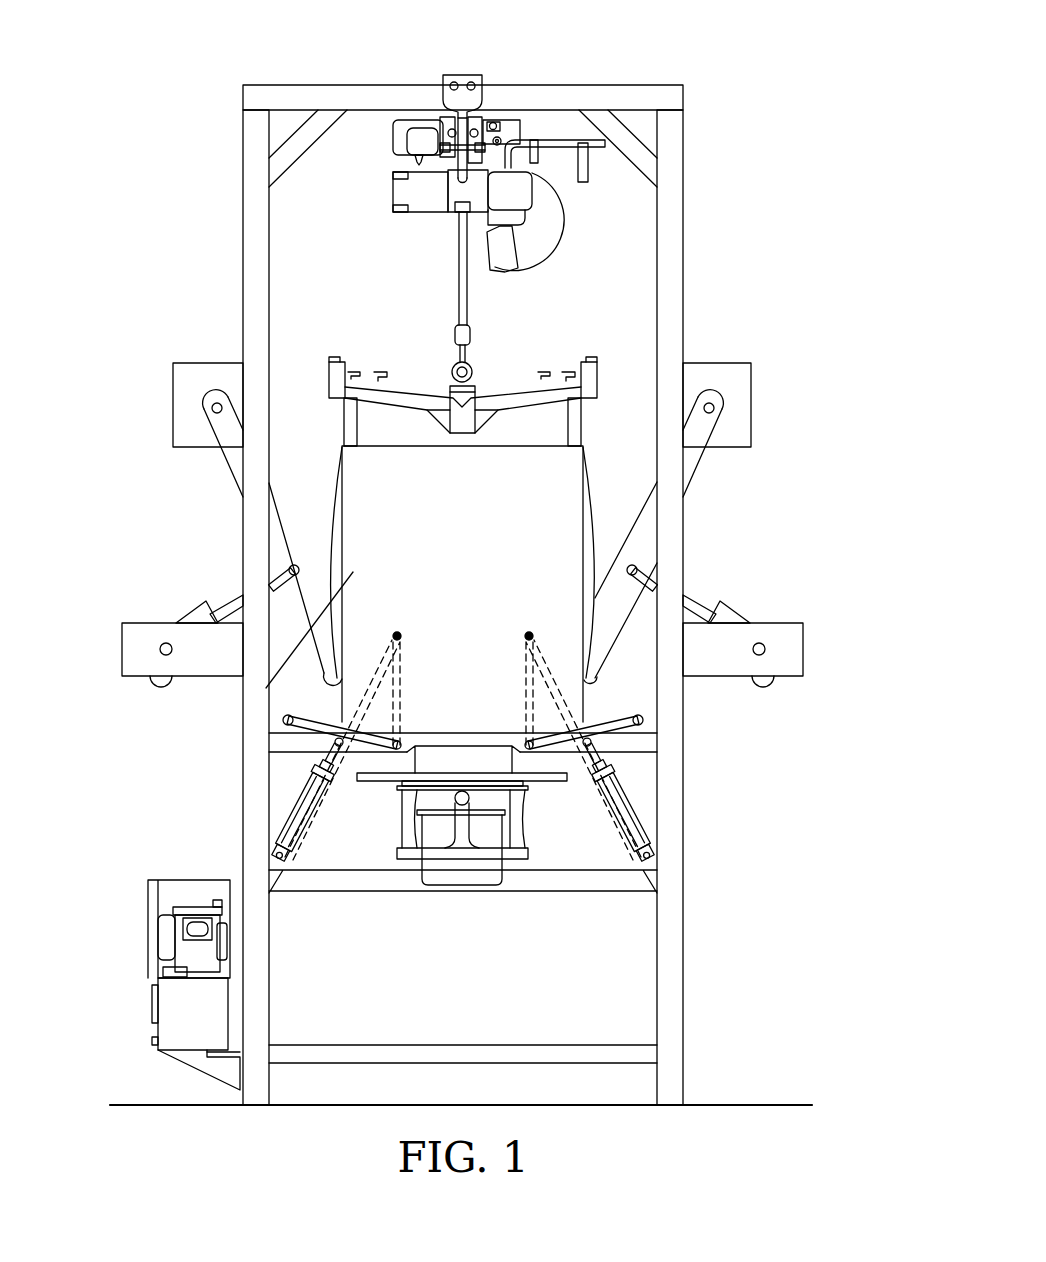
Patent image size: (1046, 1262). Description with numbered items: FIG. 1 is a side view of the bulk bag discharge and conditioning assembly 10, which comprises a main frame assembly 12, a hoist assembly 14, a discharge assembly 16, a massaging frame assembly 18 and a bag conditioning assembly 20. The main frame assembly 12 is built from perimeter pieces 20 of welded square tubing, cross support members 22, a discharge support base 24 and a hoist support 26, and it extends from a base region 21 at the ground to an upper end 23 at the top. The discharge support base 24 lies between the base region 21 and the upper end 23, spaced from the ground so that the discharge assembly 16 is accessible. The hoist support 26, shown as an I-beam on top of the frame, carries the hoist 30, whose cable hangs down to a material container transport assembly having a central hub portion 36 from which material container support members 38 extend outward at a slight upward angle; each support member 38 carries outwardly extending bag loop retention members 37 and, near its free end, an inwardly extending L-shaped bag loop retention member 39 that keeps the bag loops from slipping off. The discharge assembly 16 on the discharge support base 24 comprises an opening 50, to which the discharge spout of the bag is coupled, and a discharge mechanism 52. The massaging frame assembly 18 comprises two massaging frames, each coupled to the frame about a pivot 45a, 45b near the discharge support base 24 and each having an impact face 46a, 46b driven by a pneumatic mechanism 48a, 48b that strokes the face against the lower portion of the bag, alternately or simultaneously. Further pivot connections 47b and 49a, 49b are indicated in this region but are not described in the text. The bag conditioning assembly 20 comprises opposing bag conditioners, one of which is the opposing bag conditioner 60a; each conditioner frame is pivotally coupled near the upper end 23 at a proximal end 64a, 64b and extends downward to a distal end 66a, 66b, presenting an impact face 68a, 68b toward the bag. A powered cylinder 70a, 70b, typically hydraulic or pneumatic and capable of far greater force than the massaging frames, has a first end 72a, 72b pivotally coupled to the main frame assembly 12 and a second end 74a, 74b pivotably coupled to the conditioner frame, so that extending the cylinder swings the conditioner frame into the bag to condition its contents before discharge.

The bulk bag discharge and conditioning assembly 10 is at (742, 66).
The main frame assembly 12 is at (596, 84).
The hoist assembly 14 is at (445, 290).
The discharge assembly 16 is at (381, 872).
The massaging frame assembly 18 is at (277, 817).
The perimeter pieces 20 is at (683, 170).
The base region 21 is at (297, 700).
The cross support members 22 is at (330, 85).
The upper end 23 is at (230, 172).
The discharge support base 24 is at (297, 764).
The hoist support 26 is at (485, 110).
The hoist 30 is at (380, 183).
The central hub portion 36 is at (478, 382).
The outwardly extending bag loop retention members 37 is at (549, 378).
The material container support member 38 is at (510, 393).
The inwardly extending L-shaped bag loop retention member 39 is at (598, 375).
The pivot 45a is at (400, 740).
The pivot 45b is at (523, 740).
The impact face 46a is at (284, 718).
The impact face 46b is at (624, 708).
The cylinder pivot 47b is at (272, 859).
The pneumatic mechanism 48a is at (316, 815).
The pneumatic mechanism 48b is at (650, 808).
The lever pivot 49a is at (295, 742).
The lever pivot 49b is at (633, 742).
The opening 50 is at (537, 788).
The discharge mechanism 52 is at (527, 820).
The opposing bag conditioner 60a is at (232, 525).
The proximal end 64a is at (204, 405).
The proximal end 64b is at (730, 410).
The distal end 66a is at (341, 677).
The distal end 66b is at (585, 677).
The impact face 68a is at (309, 578).
The impact face 68b is at (620, 553).
The powered cylinder 70a is at (185, 617).
The powered cylinder 70b is at (745, 620).
The first end 72a is at (160, 649).
The first end 72b is at (765, 650).
The second end 74a is at (285, 572).
The second end 74b is at (640, 573).